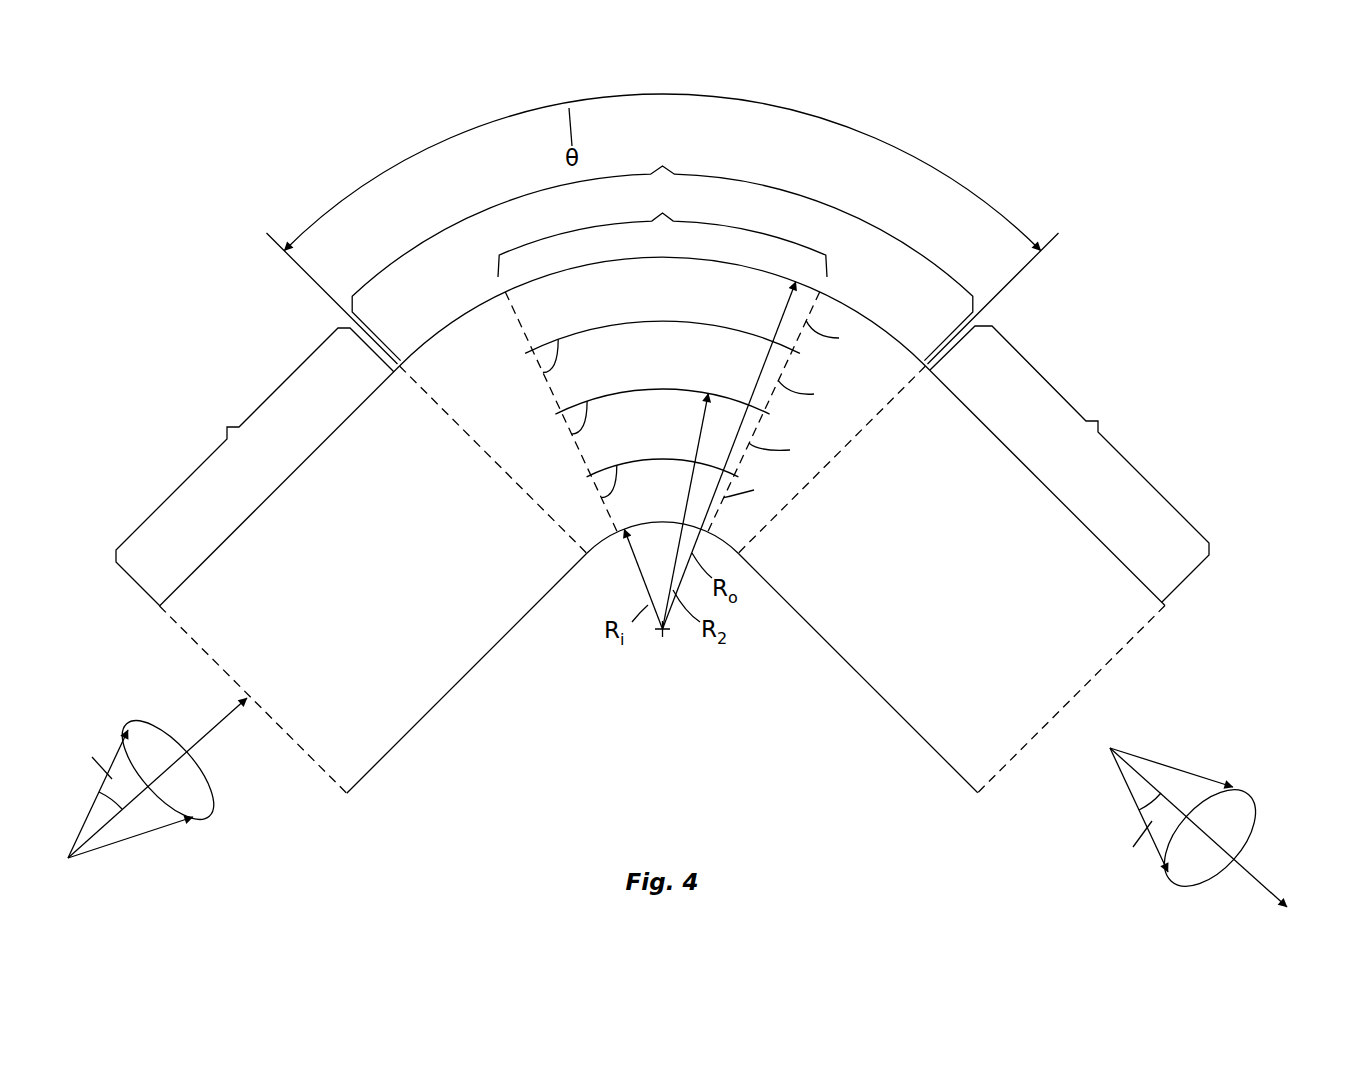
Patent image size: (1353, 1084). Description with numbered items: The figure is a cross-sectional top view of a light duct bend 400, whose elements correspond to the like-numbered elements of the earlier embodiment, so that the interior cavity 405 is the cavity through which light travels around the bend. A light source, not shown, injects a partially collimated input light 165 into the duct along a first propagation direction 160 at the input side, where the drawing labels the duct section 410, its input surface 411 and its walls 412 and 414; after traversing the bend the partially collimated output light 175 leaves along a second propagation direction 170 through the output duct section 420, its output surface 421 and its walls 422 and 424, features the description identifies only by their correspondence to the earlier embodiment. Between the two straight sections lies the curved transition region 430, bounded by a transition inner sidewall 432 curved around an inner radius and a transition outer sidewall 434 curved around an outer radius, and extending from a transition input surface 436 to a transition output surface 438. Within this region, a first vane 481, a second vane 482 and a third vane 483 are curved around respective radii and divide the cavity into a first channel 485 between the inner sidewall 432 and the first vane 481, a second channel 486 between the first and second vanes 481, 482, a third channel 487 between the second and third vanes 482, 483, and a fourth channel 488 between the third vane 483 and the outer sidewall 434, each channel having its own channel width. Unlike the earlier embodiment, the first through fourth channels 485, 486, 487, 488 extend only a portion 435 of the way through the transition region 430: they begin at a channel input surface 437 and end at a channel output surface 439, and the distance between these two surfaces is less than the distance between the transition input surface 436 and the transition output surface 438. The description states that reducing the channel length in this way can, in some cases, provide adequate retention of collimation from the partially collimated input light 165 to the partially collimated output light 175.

The light duct bend 400 is at (1110, 197).
The interior cavity 405 is at (663, 541).
The first arm section 410 is at (255, 467).
The input end face 411 is at (318, 766).
The inner surface of first arm 412 is at (438, 701).
The outer surface of first arm 414 is at (240, 525).
The second arm section 420 is at (1069, 464).
The output end face 421 is at (1018, 753).
The inner surface of second arm 422 is at (880, 695).
The outer surface of second arm 424 is at (1068, 506).
The transition region 430 is at (662, 250).
The transition inner sidewall 432 is at (600, 548).
The transition outer sidewall 434 is at (895, 337).
The portion of the transition region 435 is at (662, 232).
The transition input surface 436 is at (430, 398).
The channel input surface 437 is at (512, 310).
The transition output surface 438 is at (880, 412).
The channel output surface 439 is at (807, 309).
The first vane 481 is at (601, 498).
The second vane 482 is at (572, 434).
The third vane 483 is at (543, 372).
The first channel 485 is at (684, 483).
The second channel 486 is at (686, 430).
The third channel 487 is at (683, 368).
The fourth channel 488 is at (748, 317).
The first propagation direction 160 is at (223, 721).
The partially collimated input light 165 is at (148, 848).
The second propagation direction 170 is at (1262, 884).
The partially collimated output light 175 is at (1250, 760).